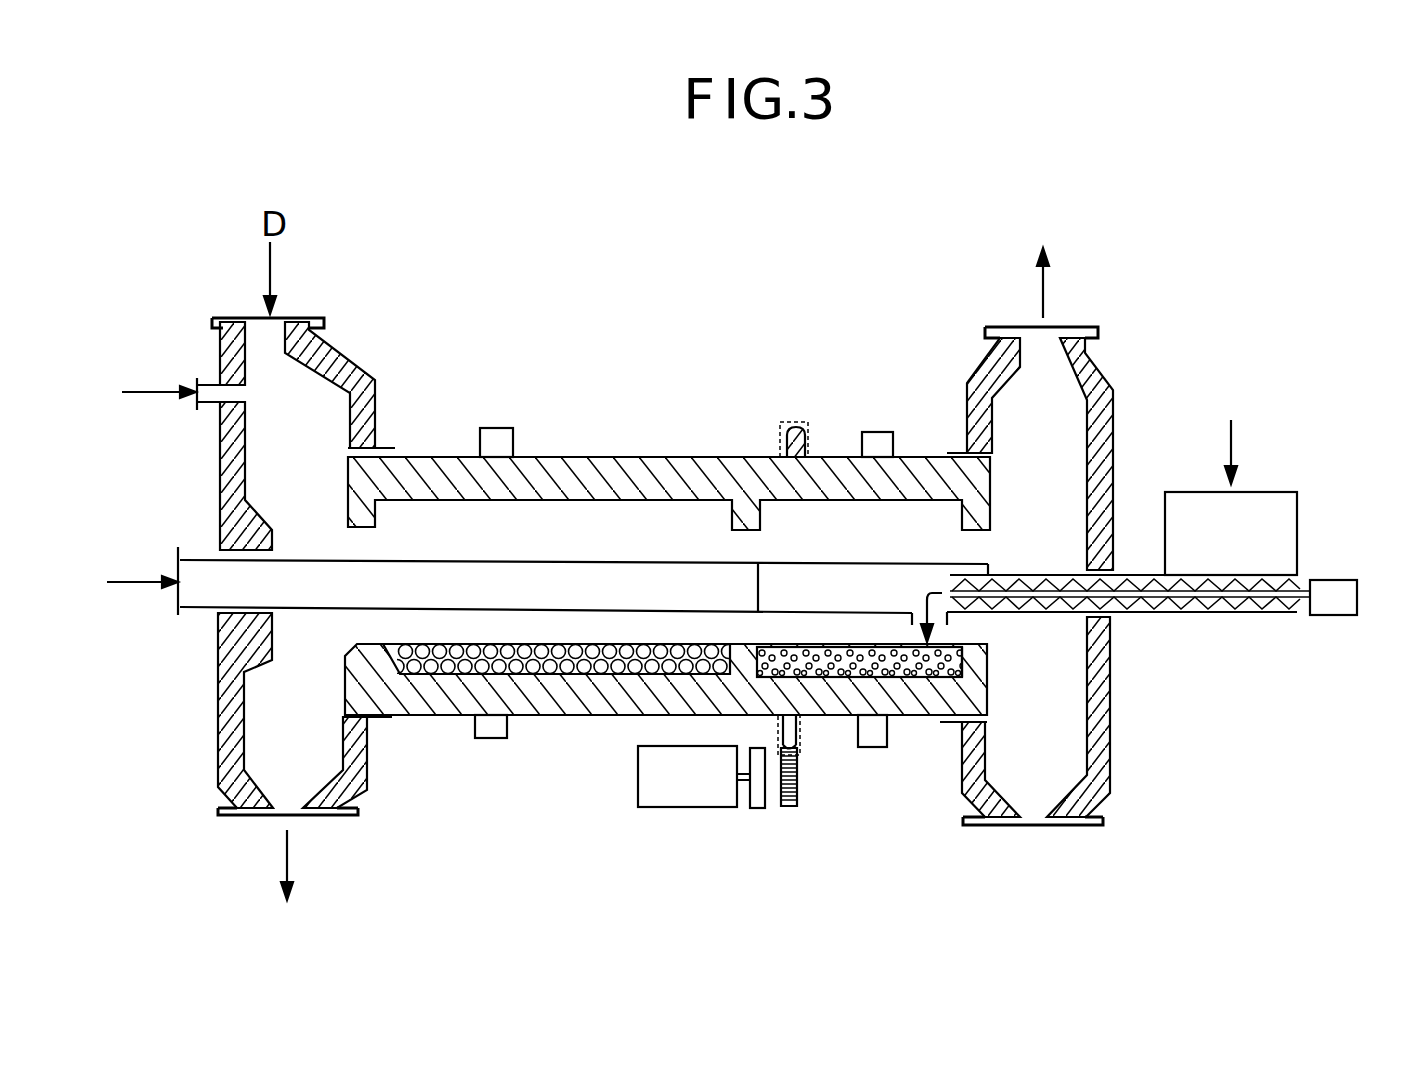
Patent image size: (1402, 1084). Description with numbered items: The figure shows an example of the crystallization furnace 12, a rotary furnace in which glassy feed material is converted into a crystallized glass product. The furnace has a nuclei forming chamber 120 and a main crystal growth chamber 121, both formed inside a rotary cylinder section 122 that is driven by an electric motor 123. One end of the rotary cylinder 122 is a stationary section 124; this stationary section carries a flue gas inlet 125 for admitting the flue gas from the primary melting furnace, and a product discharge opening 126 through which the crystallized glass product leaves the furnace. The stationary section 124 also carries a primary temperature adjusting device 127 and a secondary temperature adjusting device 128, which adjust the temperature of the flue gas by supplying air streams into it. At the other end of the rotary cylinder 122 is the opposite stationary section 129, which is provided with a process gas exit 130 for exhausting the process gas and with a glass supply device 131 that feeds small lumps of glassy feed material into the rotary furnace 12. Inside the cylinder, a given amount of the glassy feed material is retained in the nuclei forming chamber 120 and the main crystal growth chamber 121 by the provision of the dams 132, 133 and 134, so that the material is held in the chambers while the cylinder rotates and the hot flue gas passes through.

The crystallization furnace 12 is at (716, 418).
The nuclei forming chamber 120 is at (840, 525).
The main crystal growth chamber 121 is at (577, 633).
The rotary cylinder section 122 is at (638, 452).
The electric motor 123 is at (700, 808).
The stationary section 124 is at (342, 358).
The flue gas inlet 125 is at (275, 318).
The product discharge opening 126 is at (289, 815).
The primary temperature adjusting device 127 is at (195, 403).
The secondary temperature adjusting device 128 is at (177, 592).
The opposite stationary section 129 is at (1113, 405).
The process gas exit 130 is at (1050, 328).
The glass supply device 131 is at (1290, 492).
The dam 132 is at (987, 660).
The dam 133 is at (738, 643).
The dam 134 is at (363, 652).